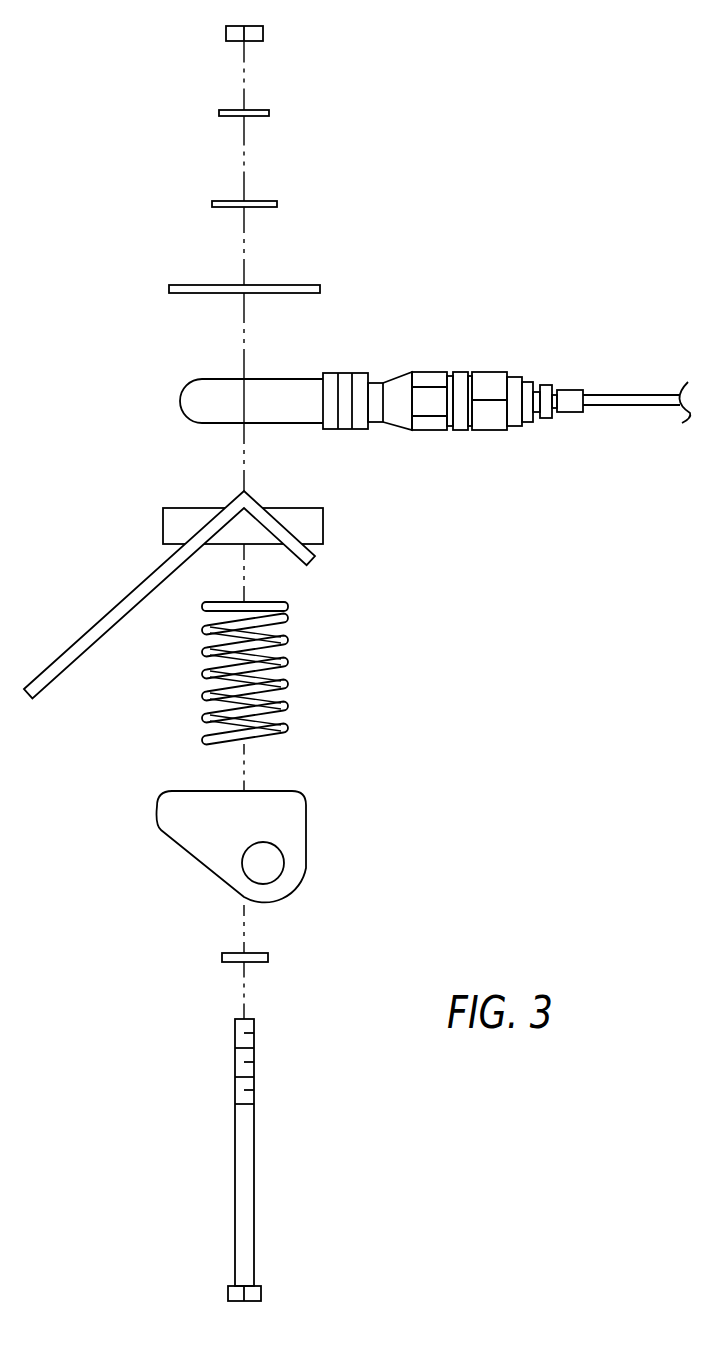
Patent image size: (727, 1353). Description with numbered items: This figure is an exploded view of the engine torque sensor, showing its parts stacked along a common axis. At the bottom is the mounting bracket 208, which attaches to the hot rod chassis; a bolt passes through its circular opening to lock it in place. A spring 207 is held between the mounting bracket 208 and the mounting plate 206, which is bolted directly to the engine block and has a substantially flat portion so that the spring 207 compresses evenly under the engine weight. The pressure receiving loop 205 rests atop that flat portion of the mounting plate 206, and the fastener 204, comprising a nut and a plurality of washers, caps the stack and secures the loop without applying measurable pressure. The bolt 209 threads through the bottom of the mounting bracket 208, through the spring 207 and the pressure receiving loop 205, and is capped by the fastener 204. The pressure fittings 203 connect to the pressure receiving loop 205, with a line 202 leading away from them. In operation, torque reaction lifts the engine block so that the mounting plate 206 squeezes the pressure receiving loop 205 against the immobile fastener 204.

The cable 202 is at (617, 395).
The pressure fittings 203 is at (423, 373).
The fastener 204 is at (360, 15).
The pressure receiving loop 205 is at (180, 398).
The mounting plate 206 is at (282, 508).
The spring 207 is at (288, 640).
The mounting bracket 208 is at (306, 825).
The bolt 209 is at (254, 1188).